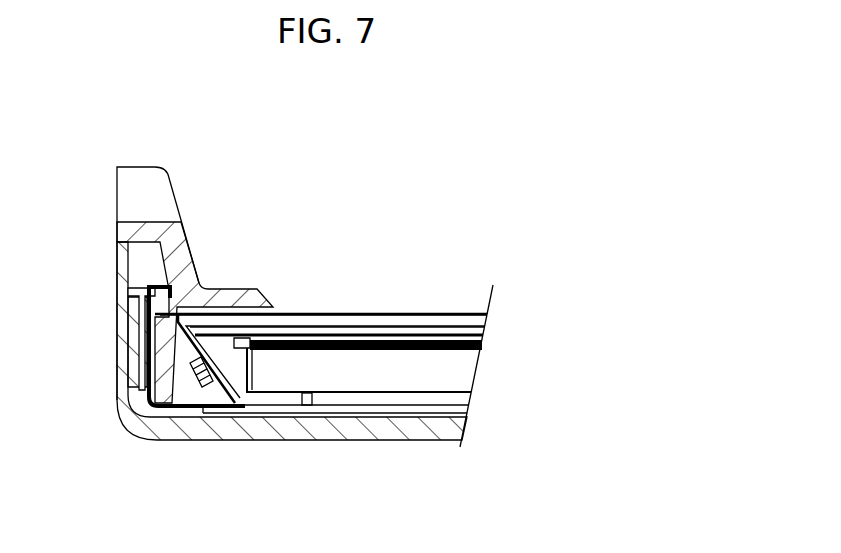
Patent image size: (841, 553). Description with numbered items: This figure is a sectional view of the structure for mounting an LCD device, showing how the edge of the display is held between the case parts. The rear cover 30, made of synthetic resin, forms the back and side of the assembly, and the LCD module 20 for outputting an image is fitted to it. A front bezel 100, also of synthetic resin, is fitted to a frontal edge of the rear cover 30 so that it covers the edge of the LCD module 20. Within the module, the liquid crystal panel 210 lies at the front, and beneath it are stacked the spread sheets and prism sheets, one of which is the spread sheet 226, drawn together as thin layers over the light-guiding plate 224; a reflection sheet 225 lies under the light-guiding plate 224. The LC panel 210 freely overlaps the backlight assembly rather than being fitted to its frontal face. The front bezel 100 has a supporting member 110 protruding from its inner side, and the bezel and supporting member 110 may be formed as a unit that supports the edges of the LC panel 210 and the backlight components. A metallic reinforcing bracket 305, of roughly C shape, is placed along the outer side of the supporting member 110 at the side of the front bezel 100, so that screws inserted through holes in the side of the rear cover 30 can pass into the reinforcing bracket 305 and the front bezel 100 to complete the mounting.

The front bezel 100 is at (182, 238).
The LCD module 20 is at (330, 313).
The liquid crystal panel 210 is at (431, 328).
The spread sheet 226 is at (480, 338).
The light-guiding plate 224 is at (460, 370).
The reflection sheet 225 is at (383, 397).
The rear cover 30 is at (210, 430).
The reinforcing bracket 305 is at (130, 320).
The supporting member 110 is at (162, 361).